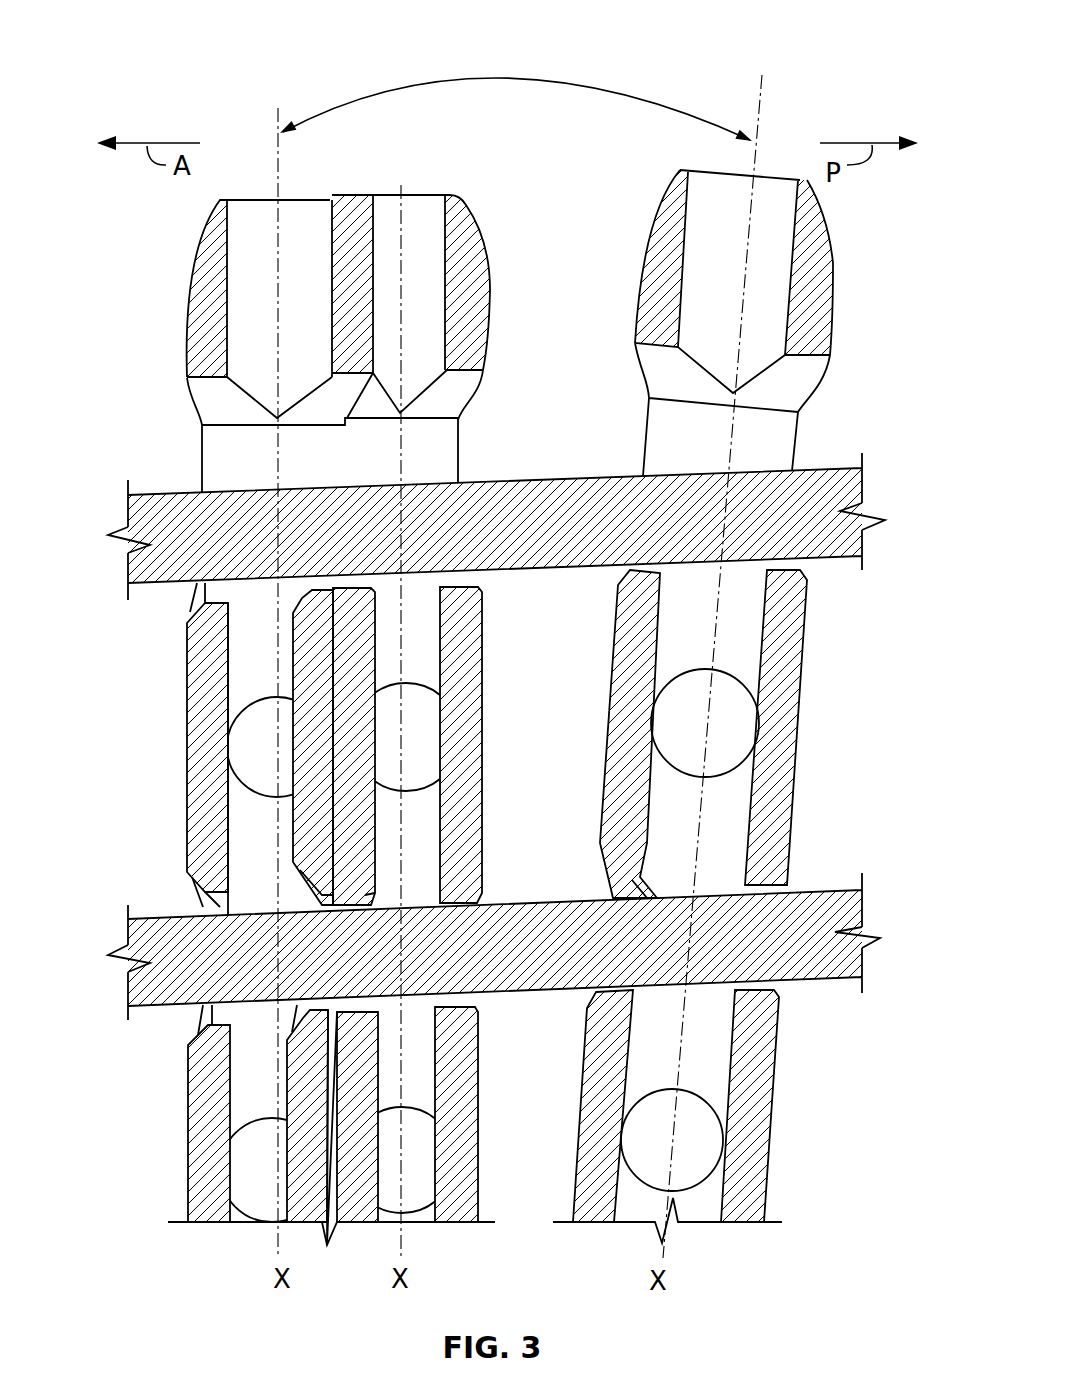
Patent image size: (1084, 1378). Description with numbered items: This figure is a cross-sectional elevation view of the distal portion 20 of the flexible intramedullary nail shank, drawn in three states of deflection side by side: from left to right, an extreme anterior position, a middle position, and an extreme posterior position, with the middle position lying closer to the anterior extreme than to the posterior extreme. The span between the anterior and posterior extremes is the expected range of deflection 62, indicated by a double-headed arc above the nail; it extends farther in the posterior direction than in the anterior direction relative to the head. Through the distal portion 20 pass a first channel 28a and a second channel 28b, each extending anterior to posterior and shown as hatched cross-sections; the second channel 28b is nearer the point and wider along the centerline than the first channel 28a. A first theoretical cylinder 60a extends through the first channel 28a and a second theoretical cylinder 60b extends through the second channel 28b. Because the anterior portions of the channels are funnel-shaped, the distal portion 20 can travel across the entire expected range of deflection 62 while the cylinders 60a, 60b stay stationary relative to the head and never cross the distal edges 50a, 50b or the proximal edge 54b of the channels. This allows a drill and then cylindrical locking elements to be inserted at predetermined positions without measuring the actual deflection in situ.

The distal portion 20 is at (890, 753).
The first channel 28a is at (175, 1035).
The second channel 28b is at (135, 440).
The lower seal 50a is at (387, 890).
The upper seal 50b is at (393, 340).
The upper liner portion 54b is at (388, 590).
The first theoretical cylinder 60a is at (192, 892).
The second theoretical cylinder 60b is at (175, 590).
The expected range of deflection 62 is at (500, 76).